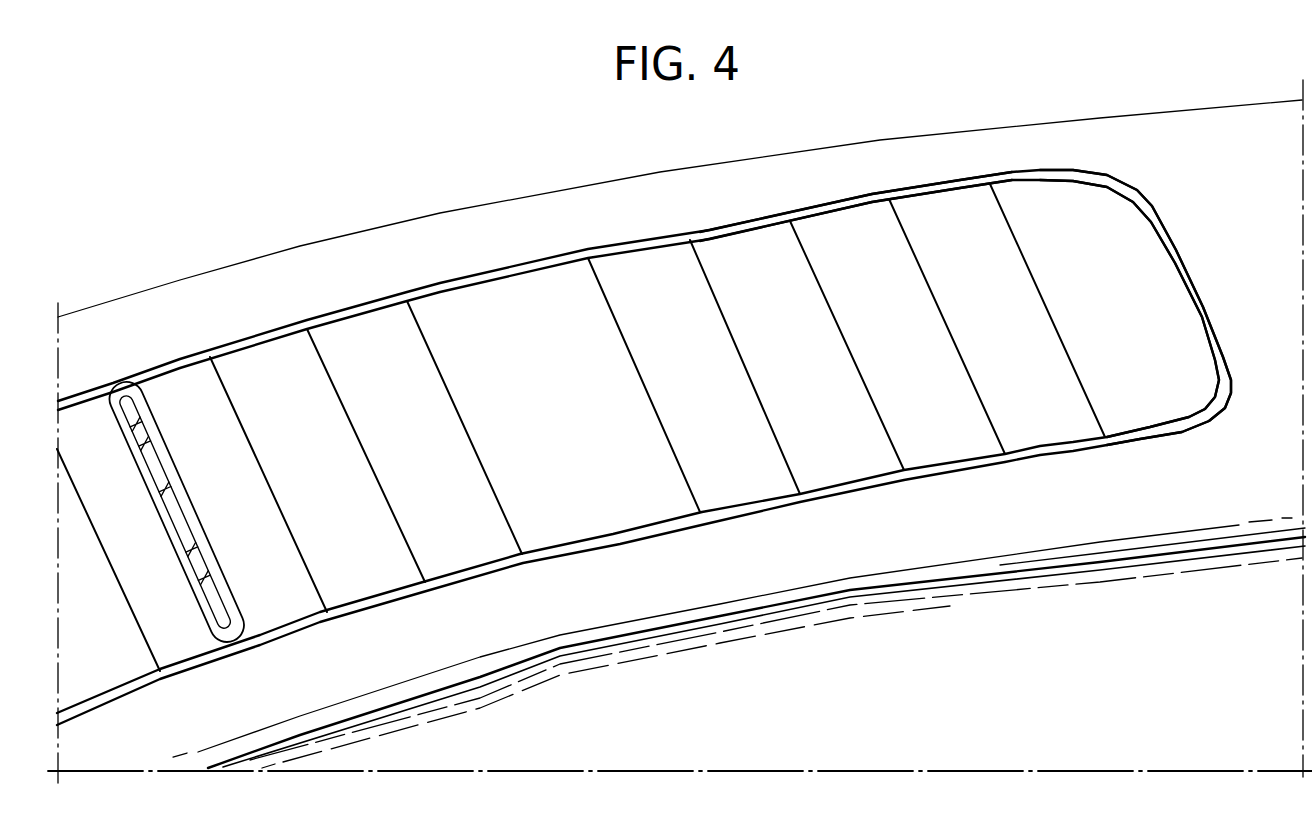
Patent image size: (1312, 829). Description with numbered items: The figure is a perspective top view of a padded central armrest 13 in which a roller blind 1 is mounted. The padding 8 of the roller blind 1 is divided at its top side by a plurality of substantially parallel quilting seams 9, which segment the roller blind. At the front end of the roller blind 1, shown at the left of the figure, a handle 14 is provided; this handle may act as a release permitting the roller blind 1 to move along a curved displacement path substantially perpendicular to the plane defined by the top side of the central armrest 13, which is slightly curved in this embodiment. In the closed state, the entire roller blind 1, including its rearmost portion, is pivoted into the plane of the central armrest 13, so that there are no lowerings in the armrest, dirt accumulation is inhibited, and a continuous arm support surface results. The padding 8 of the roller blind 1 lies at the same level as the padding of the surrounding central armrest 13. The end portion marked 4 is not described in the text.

The roller blind 1 is at (637, 266).
The end portion 4 is at (1090, 207).
The padding 8 is at (874, 225).
The quilting seams 9 is at (812, 250).
The central armrest 13 is at (437, 245).
The handle 14 is at (148, 408).